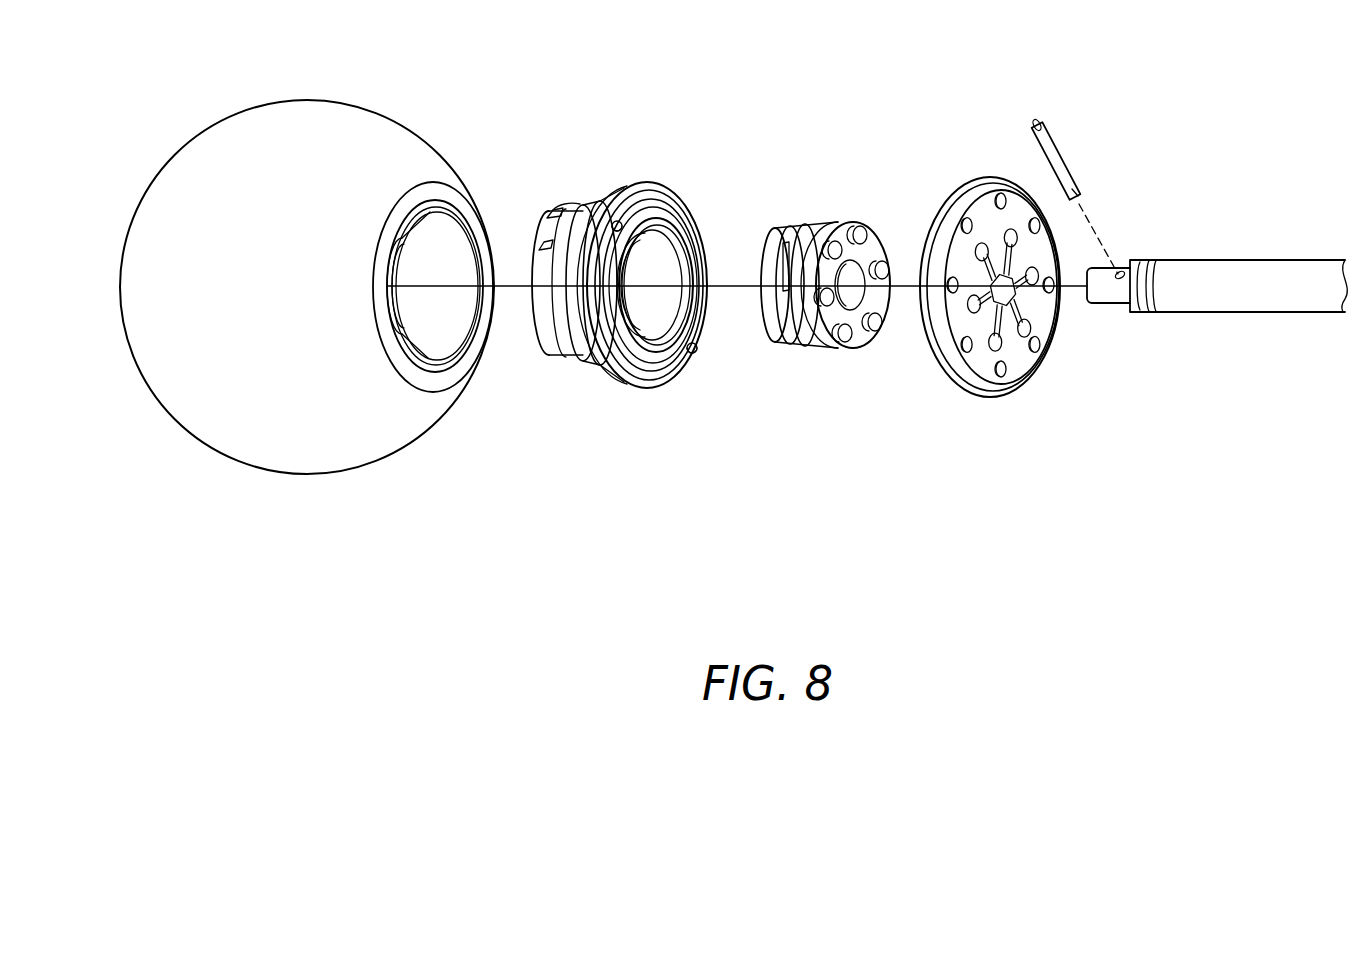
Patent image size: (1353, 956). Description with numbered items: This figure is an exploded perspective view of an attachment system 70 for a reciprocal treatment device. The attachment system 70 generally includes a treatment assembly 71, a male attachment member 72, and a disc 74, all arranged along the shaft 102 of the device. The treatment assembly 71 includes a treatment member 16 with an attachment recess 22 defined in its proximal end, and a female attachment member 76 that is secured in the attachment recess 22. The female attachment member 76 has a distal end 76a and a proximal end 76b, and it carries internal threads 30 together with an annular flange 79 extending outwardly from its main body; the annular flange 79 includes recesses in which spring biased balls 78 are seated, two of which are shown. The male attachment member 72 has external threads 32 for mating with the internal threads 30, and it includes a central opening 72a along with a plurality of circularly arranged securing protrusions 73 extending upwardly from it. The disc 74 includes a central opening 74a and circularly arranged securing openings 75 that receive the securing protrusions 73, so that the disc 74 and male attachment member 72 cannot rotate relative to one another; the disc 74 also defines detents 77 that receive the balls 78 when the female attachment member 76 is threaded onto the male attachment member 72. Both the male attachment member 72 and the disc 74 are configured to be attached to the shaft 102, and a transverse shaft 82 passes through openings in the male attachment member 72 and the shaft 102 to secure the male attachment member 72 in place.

The treatment member 16 is at (307, 458).
The attachment recess 22 is at (432, 247).
The internal threads 30 is at (686, 262).
The external threads 32 is at (815, 350).
The attachment system 70 is at (1226, 466).
The treatment assembly 71 is at (687, 436).
The male attachment member 72 is at (865, 388).
The central opening of the male attachment member 72a is at (856, 297).
The securing protrusions 73 is at (862, 232).
The disc 74 is at (1106, 364).
The central opening of the disc 74a is at (1014, 293).
The securing openings 75 is at (1032, 220).
The female attachment member 76 is at (630, 152).
The distal end of the female attachment member 76a is at (542, 347).
The proximal end of the female attachment member 76b is at (658, 218).
The detents 77 is at (1007, 230).
The spring biased balls 78 is at (615, 220).
The annular flange 79 is at (648, 380).
The shaft 82 is at (1065, 157).
The shaft 102 is at (1250, 300).